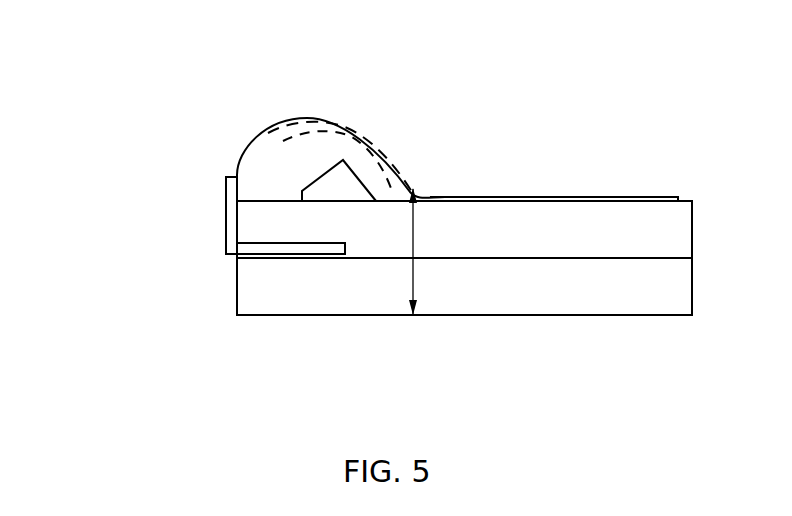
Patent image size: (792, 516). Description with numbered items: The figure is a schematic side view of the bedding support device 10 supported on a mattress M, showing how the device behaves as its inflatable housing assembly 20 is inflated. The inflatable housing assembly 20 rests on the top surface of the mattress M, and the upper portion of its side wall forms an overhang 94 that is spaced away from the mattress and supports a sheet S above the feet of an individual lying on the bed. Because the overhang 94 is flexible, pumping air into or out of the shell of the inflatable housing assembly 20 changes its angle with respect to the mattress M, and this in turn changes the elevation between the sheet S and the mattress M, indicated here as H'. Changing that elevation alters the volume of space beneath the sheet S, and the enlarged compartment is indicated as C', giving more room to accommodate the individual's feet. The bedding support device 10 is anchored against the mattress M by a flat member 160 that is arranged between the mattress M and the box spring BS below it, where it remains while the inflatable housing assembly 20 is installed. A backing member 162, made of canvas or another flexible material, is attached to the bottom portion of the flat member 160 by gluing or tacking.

The bedding support device 10 is at (246, 159).
The inflatable housing assembly 20 is at (208, 169).
The overhang 94 is at (375, 185).
The flat member 160 is at (256, 258).
The backing member 162 is at (225, 215).
The enlarged compartment C' is at (303, 110).
The sheet S is at (427, 194).
The mattress M is at (655, 233).
The base substrate BS is at (692, 290).
The changed elevation H' is at (428, 287).